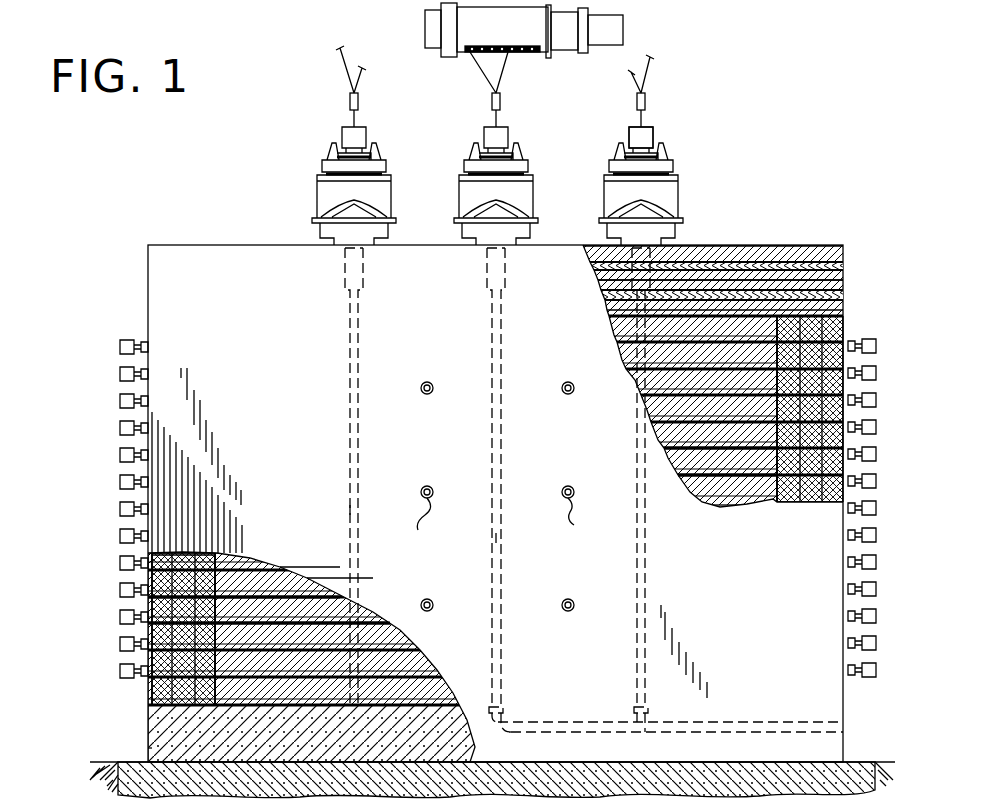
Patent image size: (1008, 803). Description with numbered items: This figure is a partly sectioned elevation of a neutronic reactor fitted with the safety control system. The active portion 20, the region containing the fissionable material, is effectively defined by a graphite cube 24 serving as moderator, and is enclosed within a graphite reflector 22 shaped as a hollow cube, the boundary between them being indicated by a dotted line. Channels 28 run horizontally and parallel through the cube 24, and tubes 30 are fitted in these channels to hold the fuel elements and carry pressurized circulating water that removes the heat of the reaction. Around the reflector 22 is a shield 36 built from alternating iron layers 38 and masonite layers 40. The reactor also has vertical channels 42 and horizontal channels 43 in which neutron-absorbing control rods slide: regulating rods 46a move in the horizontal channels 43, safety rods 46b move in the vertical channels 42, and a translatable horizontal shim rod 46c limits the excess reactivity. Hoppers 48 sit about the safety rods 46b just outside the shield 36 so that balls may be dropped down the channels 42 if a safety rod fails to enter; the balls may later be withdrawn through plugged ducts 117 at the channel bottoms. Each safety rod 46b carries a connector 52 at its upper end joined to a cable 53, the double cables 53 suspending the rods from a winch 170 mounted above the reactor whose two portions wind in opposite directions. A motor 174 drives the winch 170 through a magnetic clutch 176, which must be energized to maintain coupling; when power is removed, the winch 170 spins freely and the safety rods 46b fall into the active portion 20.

The active portion 20 is at (645, 421).
The reflector 22 is at (625, 338).
The cube 24 is at (665, 400).
The channels 28 is at (707, 484).
The tubes 30 is at (668, 457).
The shield 36 is at (845, 262).
The layers 38 is at (845, 298).
The layers 40 is at (845, 285).
The vertical channels 42 is at (500, 578).
The horizontal channels 43 is at (505, 522).
The neutron-absorbing rods 46a is at (438, 473).
The neutron-absorbing rods 46b is at (352, 510).
The horizontal rod 46c is at (438, 362).
The hoppers 48 is at (310, 194).
The connector 52 is at (650, 133).
The cable 53 is at (348, 99).
The plugged ducts 117 is at (782, 712).
The winch 170 is at (519, 52).
The motor 174 is at (612, 30).
The magnetic clutch 176 is at (583, 35).